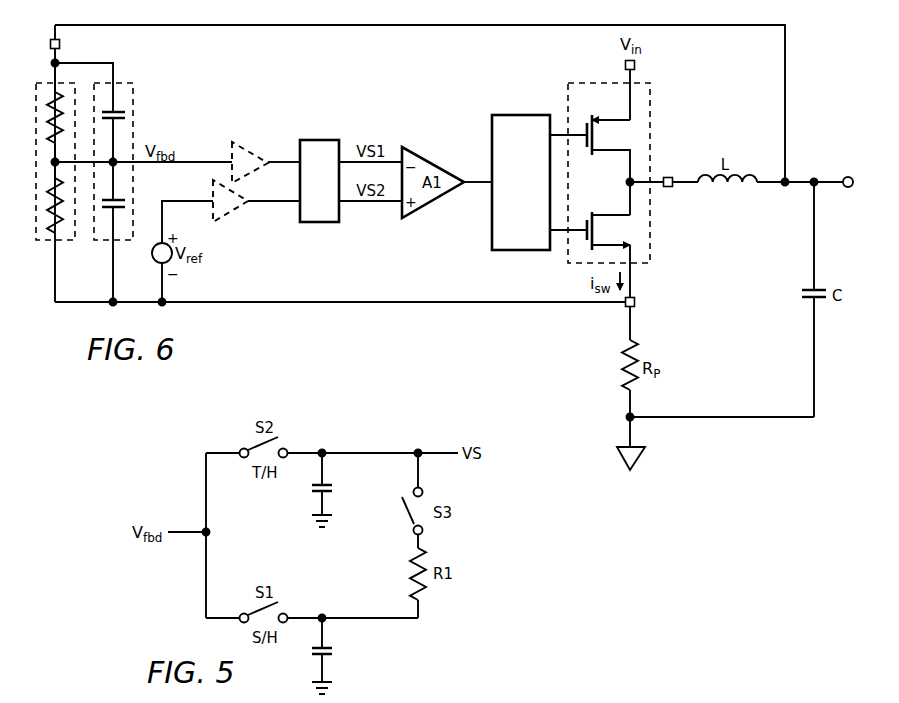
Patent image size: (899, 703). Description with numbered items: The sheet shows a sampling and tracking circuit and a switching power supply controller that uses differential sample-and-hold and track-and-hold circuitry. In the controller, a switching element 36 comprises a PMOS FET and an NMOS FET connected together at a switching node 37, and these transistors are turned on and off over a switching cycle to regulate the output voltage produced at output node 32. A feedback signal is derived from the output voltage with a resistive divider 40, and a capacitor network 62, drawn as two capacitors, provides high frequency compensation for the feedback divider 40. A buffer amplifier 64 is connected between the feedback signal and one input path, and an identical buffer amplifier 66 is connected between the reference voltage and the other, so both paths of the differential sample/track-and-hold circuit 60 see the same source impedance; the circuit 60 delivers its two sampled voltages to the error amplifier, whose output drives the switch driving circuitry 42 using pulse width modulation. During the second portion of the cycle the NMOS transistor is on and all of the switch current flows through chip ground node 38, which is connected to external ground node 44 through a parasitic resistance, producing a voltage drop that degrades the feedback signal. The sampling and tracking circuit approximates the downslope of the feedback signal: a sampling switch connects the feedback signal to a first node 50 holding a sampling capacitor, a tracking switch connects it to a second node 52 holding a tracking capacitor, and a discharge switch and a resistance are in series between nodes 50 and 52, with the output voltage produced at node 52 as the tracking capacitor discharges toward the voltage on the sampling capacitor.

In FIG. 6, the output node 32 is at (827, 182).
In FIG. 6, the switching element 36 is at (567, 262).
In FIG. 6, the switching node 37 is at (624, 182).
In FIG. 6, the chip ground node 38 is at (637, 303).
In FIG. 6, the resistive divider 40 is at (43, 240).
In FIG. 6, the switch driving circuitry 42 is at (522, 115).
In FIG. 6, the external ground node 44 is at (627, 418).
In FIG. 5, the first node 50 is at (322, 617).
In FIG. 5, the second node 52 is at (322, 452).
In FIG. 6, the differential S/H-T/H circuit 60 is at (319, 140).
In FIG. 6, the capacitor network 62 is at (133, 100).
In FIG. 6, the buffer amplifier 64 is at (248, 150).
In FIG. 6, the buffer amplifier 66 is at (237, 210).